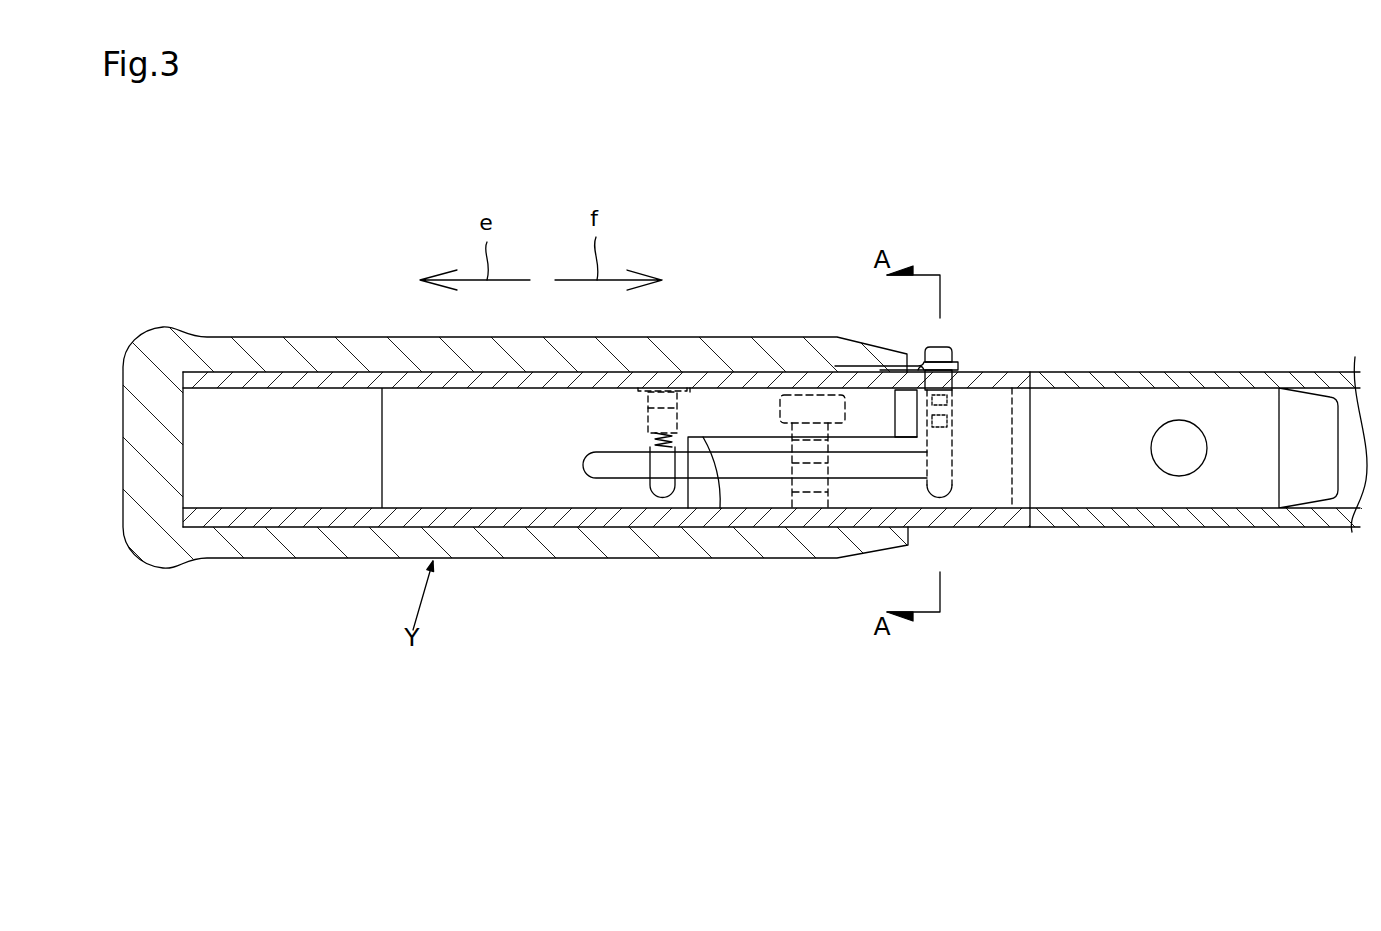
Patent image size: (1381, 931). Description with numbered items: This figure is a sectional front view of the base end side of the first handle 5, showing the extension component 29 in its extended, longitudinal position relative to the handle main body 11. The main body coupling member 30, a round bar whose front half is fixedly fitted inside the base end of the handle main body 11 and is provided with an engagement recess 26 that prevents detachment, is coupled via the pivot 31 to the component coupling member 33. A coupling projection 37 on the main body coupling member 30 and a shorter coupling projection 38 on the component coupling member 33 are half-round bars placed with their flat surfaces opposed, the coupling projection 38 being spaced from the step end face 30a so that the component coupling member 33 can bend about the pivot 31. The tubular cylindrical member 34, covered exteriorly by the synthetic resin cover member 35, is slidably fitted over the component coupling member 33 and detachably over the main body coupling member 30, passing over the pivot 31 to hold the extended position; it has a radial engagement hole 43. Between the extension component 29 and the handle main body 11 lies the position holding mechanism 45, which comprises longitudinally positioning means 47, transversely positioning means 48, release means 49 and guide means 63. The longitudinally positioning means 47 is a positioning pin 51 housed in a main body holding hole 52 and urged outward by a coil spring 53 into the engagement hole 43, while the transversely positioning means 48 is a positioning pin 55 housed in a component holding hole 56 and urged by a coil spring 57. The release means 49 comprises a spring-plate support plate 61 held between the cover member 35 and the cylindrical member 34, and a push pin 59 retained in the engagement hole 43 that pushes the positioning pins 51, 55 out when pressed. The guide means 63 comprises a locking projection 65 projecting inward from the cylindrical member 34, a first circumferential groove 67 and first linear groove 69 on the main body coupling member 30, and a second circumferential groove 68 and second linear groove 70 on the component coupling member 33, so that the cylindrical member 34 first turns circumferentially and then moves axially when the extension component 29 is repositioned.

The first handle 5 is at (1163, 323).
The handle main body 11 is at (1298, 371).
The engagement recess 26 is at (1180, 458).
The extension component 29 is at (752, 324).
The main body coupling member 30 is at (990, 520).
The step end face 30a is at (873, 362).
The pivot 31 is at (793, 393).
The component coupling member 33 is at (531, 511).
The cylindrical member 34 is at (403, 370).
The cover member 35 is at (480, 552).
The coupling projection 37 is at (760, 498).
The coupling projection 38 is at (713, 402).
The engagement hole 43 is at (954, 364).
The position holding mechanism 45 is at (963, 447).
The longitudinally positioning means 47 is at (952, 408).
The transversely positioning means 48 is at (645, 432).
The release means 49 is at (943, 346).
The positioning pin 51 is at (960, 425).
The main body holding hole 52 is at (1013, 386).
The coil spring 53 is at (987, 520).
The positioning pin 55 is at (647, 422).
The component holding hole 56 is at (689, 510).
The coil spring 57 is at (650, 468).
The push pin 59 is at (925, 362).
The support plate 61 is at (842, 364).
The guide means 63 is at (897, 479).
The locking projection 65 is at (919, 500).
The first circumferential groove 67 is at (958, 498).
The second circumferential groove 68 is at (657, 499).
The first linear groove 69 is at (856, 480).
The second linear groove 70 is at (584, 466).